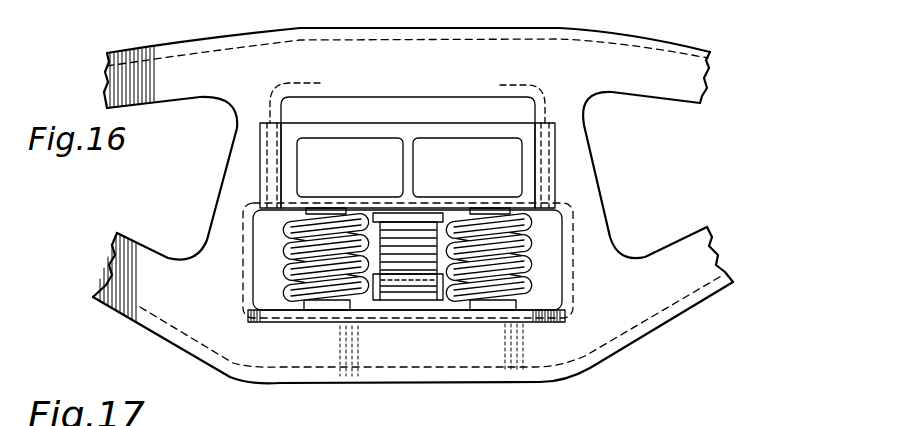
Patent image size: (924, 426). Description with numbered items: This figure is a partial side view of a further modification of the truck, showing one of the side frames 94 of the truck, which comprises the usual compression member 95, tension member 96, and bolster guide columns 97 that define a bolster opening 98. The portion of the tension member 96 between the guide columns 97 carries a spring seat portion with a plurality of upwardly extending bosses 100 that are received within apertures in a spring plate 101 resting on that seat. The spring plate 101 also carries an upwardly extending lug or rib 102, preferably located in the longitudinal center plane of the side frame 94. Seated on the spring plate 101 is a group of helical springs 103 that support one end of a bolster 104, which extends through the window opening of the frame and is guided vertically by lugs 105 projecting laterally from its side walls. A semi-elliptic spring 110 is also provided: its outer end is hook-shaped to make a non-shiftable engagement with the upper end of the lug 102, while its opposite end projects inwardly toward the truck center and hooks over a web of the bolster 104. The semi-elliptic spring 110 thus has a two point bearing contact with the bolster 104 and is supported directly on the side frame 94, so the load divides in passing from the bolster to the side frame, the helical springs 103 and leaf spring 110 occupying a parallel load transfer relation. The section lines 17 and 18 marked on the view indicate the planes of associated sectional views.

The side frame 94 is at (718, 73).
The compression member 95 is at (567, 33).
The tension member 96 is at (547, 362).
The bolster guide columns 97 is at (240, 148).
The bolster opening 98 is at (572, 242).
The bosses 100 is at (328, 309).
The spring plate 101 is at (292, 310).
The lug or rib 102 is at (408, 299).
The helical springs 103 is at (287, 248).
The bolster 104 is at (353, 122).
The lugs 105 is at (548, 133).
The semi-elliptic spring 110 is at (414, 235).
The section line 17- 17 is at (435, 113).
The section line 18- 18 is at (257, 158).